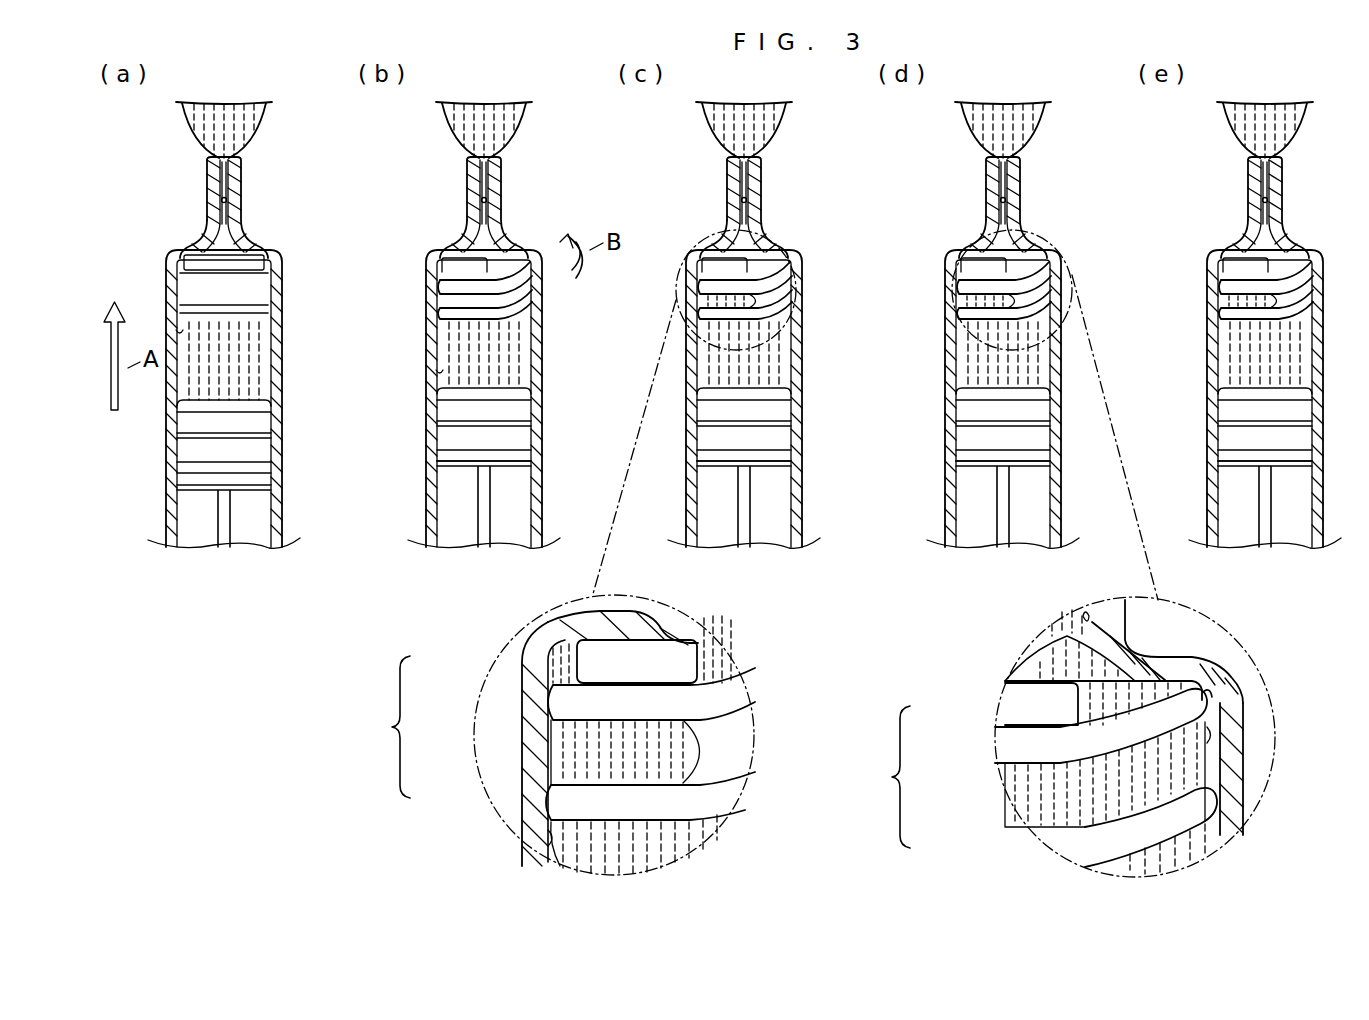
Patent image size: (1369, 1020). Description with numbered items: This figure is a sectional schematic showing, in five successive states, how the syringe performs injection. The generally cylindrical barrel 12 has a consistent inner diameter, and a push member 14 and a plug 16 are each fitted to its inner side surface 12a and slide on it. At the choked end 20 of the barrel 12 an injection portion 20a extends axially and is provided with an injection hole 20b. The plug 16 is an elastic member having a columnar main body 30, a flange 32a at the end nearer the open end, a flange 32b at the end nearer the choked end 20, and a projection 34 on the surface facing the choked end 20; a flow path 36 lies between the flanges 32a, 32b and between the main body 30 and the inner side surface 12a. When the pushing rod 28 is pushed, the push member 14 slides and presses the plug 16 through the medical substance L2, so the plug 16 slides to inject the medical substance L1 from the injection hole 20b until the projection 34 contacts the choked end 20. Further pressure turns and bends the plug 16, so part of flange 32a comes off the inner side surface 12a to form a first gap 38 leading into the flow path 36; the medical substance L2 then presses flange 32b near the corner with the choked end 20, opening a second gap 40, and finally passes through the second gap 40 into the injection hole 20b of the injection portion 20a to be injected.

The barrel 12 is at (286, 452).
The inner side surface 12a is at (180, 330).
The push member 14 is at (262, 424).
The plug 16 is at (262, 310).
The choked end 20 is at (256, 246).
The injection portion 20a is at (247, 210).
The injection hole 20b is at (222, 198).
The pushing rod 28 is at (262, 516).
The main body 30 is at (575, 738).
The flange 32a is at (570, 800).
The flange 32b is at (560, 698).
The projection 34 is at (200, 262).
The flow path 36 is at (254, 293).
The first gap 38 is at (560, 832).
The second gap 40 is at (1210, 692).
The medical substance L1 is at (246, 118).
The medical substance L2 is at (262, 344).